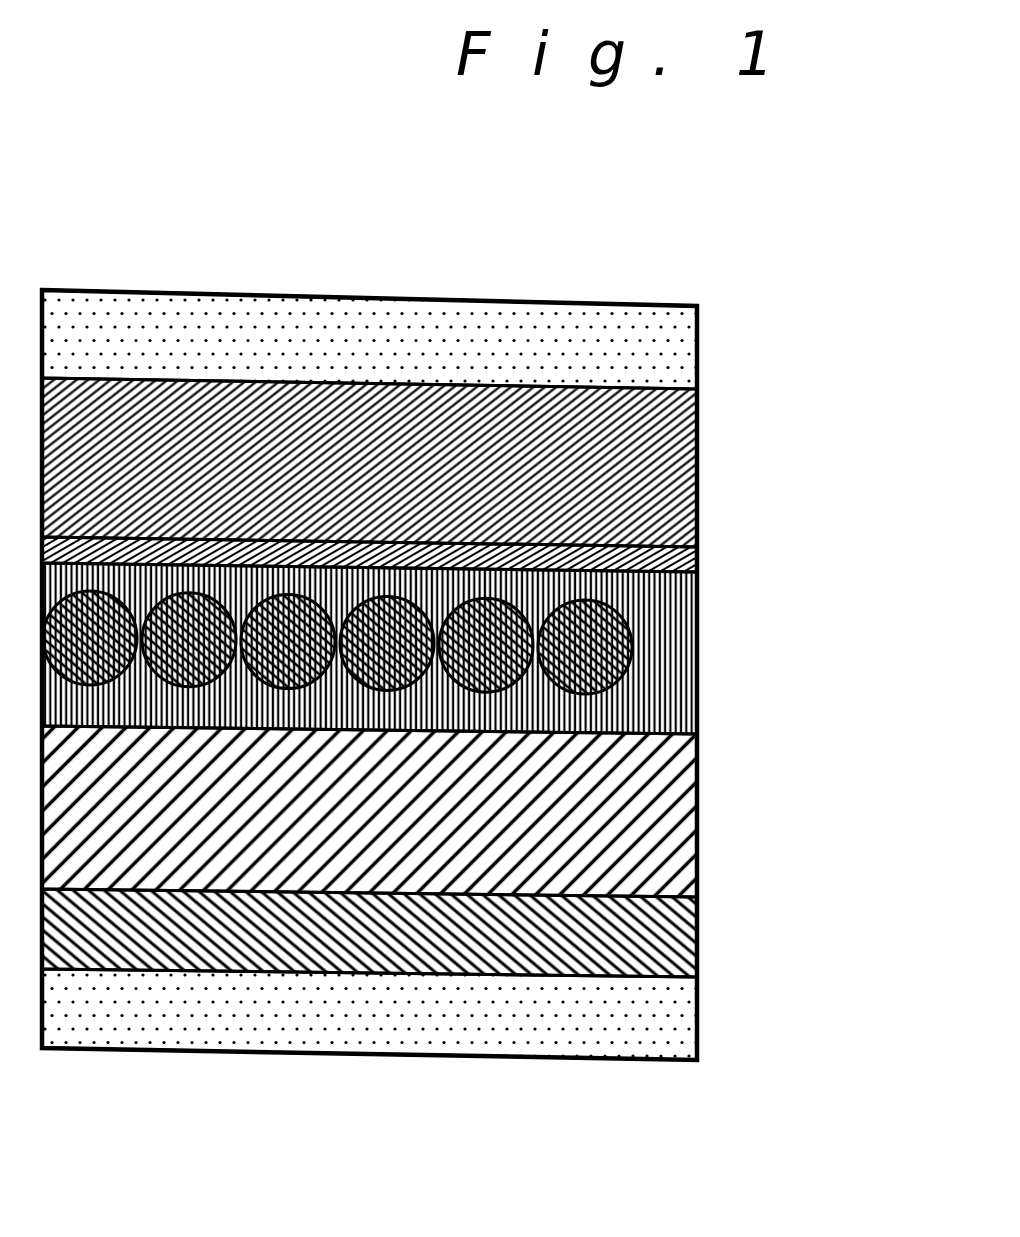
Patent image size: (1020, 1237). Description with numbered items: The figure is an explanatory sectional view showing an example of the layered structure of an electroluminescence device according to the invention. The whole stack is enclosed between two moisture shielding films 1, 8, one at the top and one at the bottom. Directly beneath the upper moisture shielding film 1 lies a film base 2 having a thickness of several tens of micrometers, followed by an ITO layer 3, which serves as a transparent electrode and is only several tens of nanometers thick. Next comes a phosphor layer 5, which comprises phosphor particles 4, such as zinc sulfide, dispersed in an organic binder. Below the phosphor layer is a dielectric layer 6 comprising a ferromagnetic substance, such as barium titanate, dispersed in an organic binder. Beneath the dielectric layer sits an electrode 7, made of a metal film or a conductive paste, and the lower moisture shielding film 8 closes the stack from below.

The moisture shielding film 1 is at (677, 347).
The film base 2 is at (663, 468).
The ITO layer 3 is at (697, 552).
The phosphor particles 4 is at (592, 648).
The phosphor layer 5 is at (667, 685).
The dielectric layer 6 is at (640, 820).
The electrode 7 is at (695, 935).
The moisture shielding film 8 is at (663, 1023).